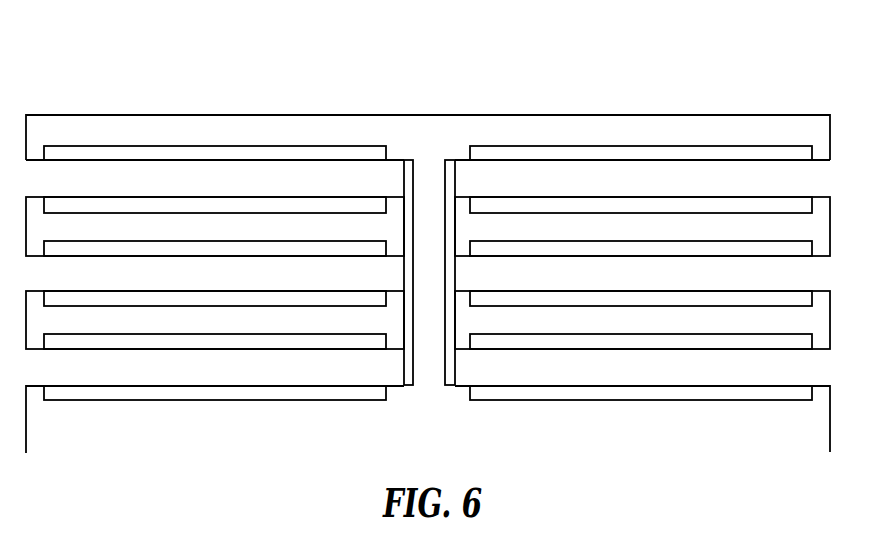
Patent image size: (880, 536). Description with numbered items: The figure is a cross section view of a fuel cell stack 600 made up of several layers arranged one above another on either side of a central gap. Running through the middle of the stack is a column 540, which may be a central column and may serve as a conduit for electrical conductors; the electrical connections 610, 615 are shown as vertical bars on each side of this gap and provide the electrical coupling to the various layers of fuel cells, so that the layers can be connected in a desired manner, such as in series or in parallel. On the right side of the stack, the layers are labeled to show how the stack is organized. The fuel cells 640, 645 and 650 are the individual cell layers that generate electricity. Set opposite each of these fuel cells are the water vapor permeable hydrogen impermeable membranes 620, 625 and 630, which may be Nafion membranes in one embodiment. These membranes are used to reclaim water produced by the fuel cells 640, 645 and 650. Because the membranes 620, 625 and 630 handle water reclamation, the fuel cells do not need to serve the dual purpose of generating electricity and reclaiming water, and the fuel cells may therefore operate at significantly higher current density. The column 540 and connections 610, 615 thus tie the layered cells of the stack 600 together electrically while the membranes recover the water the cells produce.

The fuel cell stack 600 is at (748, 65).
The column 540 is at (434, 150).
The electrical connection 610 is at (415, 172).
The electrical connection 615 is at (447, 369).
The water vapor permeable hydrogen impermeable membrane 620 is at (681, 160).
The water vapor permeable hydrogen impermeable membrane 625 is at (681, 255).
The water vapor permeable hydrogen impermeable membrane 630 is at (681, 349).
The fuel cell 640 is at (642, 196).
The fuel cell 645 is at (642, 290).
The fuel cell 650 is at (642, 385).